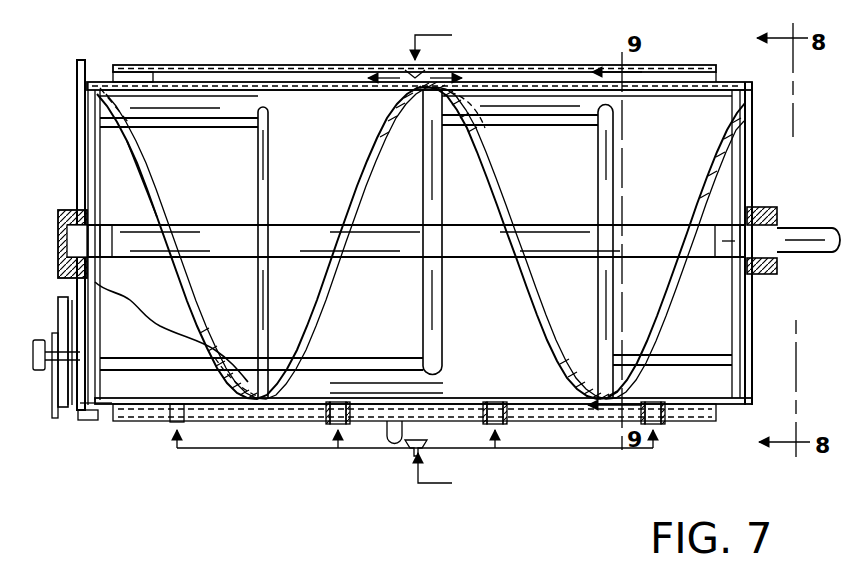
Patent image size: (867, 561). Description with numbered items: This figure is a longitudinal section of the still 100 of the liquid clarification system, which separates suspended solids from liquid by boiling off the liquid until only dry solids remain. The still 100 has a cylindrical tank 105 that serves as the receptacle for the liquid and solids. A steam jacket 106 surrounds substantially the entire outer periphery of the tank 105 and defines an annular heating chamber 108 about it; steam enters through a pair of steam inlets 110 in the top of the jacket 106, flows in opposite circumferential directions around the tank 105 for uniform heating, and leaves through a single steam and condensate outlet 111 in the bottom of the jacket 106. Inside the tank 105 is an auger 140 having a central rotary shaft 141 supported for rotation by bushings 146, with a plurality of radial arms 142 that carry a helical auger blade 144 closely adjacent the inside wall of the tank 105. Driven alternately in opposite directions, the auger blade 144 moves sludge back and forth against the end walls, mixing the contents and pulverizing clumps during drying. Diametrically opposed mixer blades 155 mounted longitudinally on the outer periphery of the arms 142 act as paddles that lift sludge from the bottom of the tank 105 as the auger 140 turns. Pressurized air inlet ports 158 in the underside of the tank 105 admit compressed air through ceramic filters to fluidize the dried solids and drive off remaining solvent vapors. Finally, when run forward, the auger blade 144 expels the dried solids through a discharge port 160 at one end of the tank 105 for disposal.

The still 100 is at (126, 61).
The cylindrical tank 105 is at (150, 75).
The steam jacket 106 is at (205, 65).
The annular heating chamber 108 is at (270, 66).
The steam inlets 110 is at (412, 62).
The steam and condensate outlet 111 is at (383, 430).
The auger 140 is at (332, 291).
The central rotary shaft 141 is at (215, 234).
The radial arms 142 is at (268, 176).
The helical auger blade 144 is at (150, 174).
The bushings 146 is at (70, 210).
The mixer blades 155 is at (170, 118).
The pressurized air inlet ports 158 is at (172, 422).
The discharge port 160 is at (54, 395).